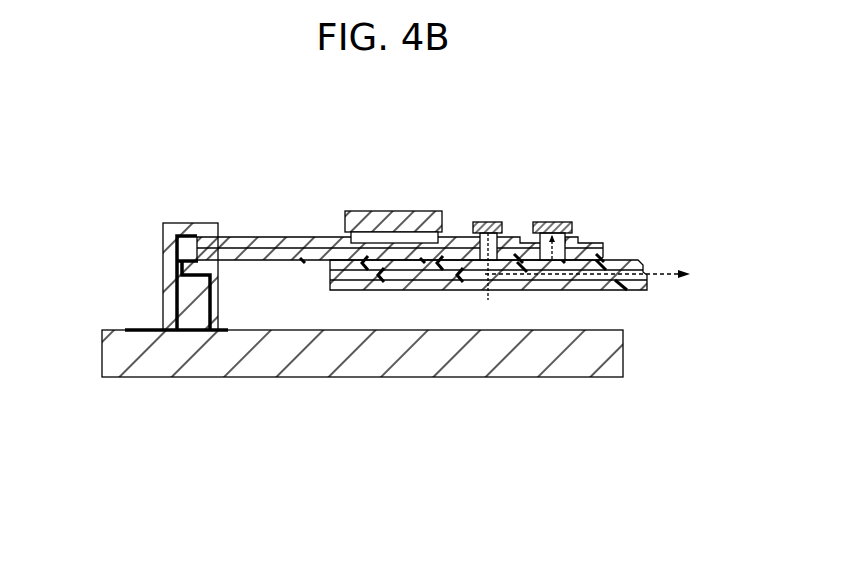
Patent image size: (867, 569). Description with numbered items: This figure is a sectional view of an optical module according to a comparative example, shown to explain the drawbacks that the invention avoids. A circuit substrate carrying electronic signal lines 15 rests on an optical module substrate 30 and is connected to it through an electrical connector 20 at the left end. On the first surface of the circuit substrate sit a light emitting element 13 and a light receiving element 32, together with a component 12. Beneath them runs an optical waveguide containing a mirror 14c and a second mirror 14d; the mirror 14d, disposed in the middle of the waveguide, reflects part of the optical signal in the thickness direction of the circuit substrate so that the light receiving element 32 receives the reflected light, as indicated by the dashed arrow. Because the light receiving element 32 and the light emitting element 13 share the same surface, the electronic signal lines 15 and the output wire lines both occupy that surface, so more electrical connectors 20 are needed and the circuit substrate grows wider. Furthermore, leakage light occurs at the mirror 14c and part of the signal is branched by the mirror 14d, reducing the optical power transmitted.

The image sensor 12 is at (397, 211).
The light emitting element 13 is at (487, 221).
The mirror 14c is at (493, 292).
The mirror 14d is at (558, 292).
The electronic signal line 15 is at (285, 237).
The electrical connector 20 is at (202, 222).
The optical module substrate 30 is at (377, 350).
The light receiving element 32 is at (550, 221).